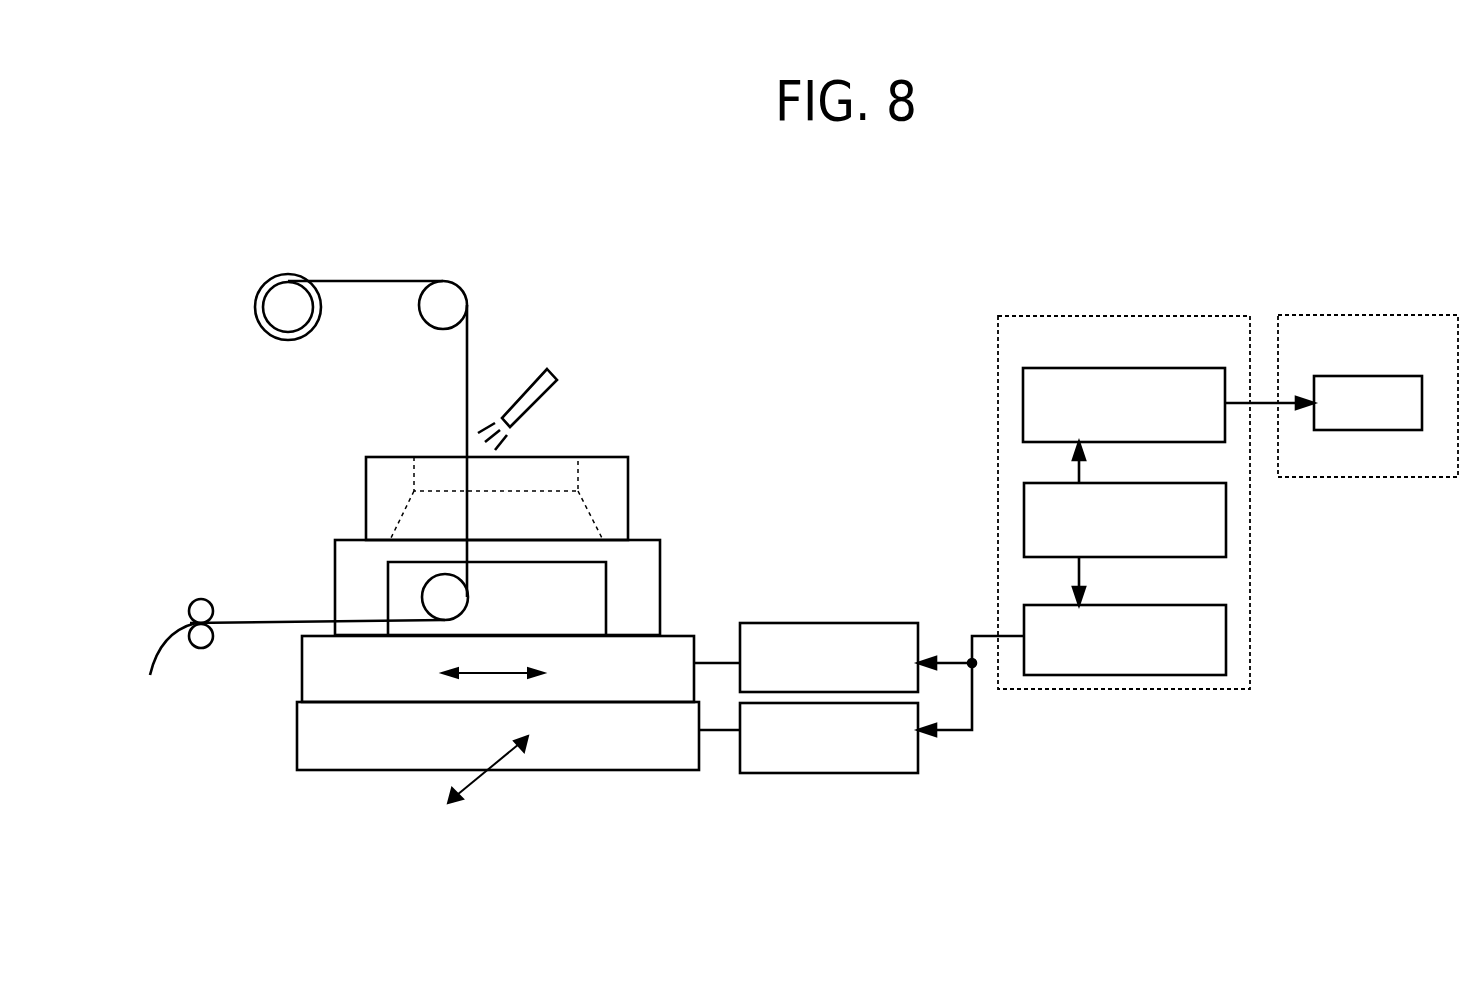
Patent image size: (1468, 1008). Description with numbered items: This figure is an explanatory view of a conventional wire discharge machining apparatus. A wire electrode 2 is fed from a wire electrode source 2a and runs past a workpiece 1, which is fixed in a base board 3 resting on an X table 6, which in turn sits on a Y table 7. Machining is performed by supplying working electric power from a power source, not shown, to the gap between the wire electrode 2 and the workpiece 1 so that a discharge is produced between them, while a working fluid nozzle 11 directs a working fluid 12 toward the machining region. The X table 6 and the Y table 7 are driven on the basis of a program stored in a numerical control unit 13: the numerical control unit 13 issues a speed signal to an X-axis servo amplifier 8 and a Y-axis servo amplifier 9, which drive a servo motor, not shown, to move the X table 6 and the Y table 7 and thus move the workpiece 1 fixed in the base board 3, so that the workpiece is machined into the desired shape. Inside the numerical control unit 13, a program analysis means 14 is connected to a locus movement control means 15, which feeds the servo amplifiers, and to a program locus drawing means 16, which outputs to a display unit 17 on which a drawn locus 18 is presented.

The workpiece 1 is at (628, 497).
The wire electrode 2 is at (467, 386).
The Wire Electrode Source 2a is at (283, 276).
The base board 3 is at (660, 582).
The X table 6 is at (302, 677).
The Y table 7 is at (297, 736).
The X-axis servo amplifier 8 is at (918, 677).
The Y-axis servo amplifier 9 is at (918, 752).
The working fluid nozzle 11 is at (528, 392).
The working fluid 12 is at (522, 439).
The numerical control unit 13 is at (1128, 316).
The program analysis means 14 is at (1024, 525).
The locus movement control means 15 is at (1024, 620).
The program locus drawing means 16 is at (1023, 402).
The display unit 17 is at (1358, 315).
The drawn locus 18 is at (1388, 412).